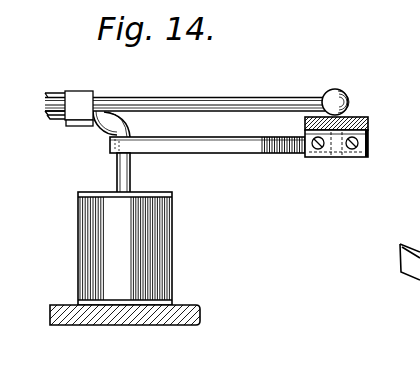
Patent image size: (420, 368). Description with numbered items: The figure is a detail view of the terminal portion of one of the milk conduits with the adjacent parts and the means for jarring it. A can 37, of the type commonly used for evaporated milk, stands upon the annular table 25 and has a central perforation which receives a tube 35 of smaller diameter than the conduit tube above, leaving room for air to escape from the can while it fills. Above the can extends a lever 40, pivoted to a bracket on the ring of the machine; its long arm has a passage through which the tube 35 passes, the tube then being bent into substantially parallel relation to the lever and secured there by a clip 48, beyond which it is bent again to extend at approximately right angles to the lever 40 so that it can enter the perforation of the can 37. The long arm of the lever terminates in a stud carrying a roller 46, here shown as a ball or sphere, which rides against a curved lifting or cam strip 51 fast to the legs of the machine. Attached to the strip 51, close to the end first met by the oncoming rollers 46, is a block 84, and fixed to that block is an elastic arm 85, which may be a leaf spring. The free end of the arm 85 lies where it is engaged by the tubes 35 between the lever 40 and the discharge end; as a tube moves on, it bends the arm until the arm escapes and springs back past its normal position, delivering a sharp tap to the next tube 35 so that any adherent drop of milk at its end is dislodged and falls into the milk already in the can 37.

The annular table 25 is at (165, 326).
The tube 35 is at (131, 172).
The can 37 is at (162, 253).
The lever 40 is at (228, 97).
The roller 46 is at (338, 98).
The clip 48 is at (79, 100).
The curved strip 51 is at (369, 119).
The block 84 is at (355, 158).
The elastic arm 85 is at (247, 154).